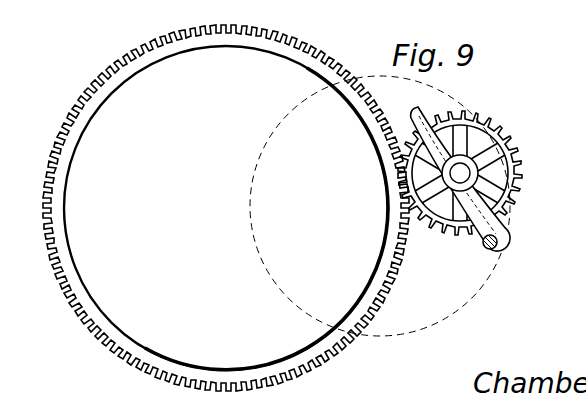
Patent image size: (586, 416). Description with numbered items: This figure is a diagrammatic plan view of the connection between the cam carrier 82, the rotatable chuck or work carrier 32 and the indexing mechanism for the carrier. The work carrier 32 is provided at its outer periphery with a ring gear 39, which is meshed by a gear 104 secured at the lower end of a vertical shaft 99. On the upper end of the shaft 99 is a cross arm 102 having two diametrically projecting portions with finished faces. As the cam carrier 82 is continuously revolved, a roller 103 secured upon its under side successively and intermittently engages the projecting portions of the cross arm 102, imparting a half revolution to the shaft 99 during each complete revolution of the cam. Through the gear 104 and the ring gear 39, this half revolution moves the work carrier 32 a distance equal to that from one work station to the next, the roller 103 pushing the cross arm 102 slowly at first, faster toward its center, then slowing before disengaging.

The work carrier 32 is at (160, 345).
The ring gear 39 is at (260, 375).
The cam carrier 82 is at (412, 330).
The vertical shaft 99 is at (470, 171).
The cross arm 102 is at (510, 221).
The roller 103 is at (503, 246).
The gear 104 is at (506, 134).